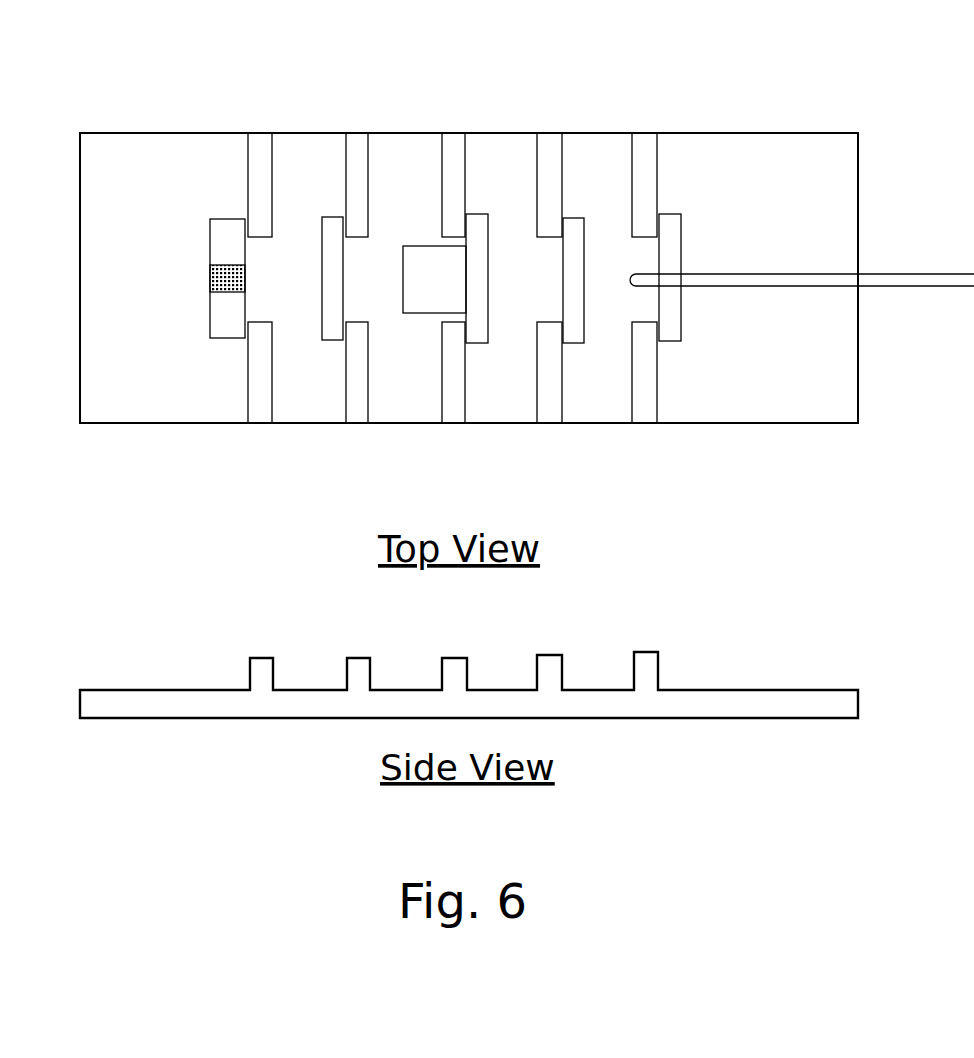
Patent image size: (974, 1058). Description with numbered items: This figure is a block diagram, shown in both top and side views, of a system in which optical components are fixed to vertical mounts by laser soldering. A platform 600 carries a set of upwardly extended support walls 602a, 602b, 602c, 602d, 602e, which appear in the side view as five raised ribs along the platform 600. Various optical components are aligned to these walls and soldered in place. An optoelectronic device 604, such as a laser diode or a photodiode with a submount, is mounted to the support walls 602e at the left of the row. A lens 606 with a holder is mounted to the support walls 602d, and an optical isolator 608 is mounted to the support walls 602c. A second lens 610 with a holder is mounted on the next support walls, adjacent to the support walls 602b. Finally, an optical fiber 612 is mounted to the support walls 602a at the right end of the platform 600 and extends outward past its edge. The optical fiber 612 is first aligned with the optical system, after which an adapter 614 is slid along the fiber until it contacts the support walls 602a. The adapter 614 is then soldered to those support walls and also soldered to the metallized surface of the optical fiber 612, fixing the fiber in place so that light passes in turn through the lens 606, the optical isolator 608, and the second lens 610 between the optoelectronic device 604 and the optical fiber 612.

The platform 600 is at (863, 378).
The support walls 602a is at (645, 428).
The support walls 602b is at (547, 428).
The support walls 602c is at (452, 428).
The support walls 602d is at (358, 428).
The support walls 602e is at (260, 428).
The optoelectronic device 604 is at (211, 212).
The lens 606 is at (319, 211).
The optical isolator 608 is at (429, 242).
The second lens 610 is at (579, 215).
The optical fiber 612 is at (736, 271).
The adapter 614 is at (684, 308).